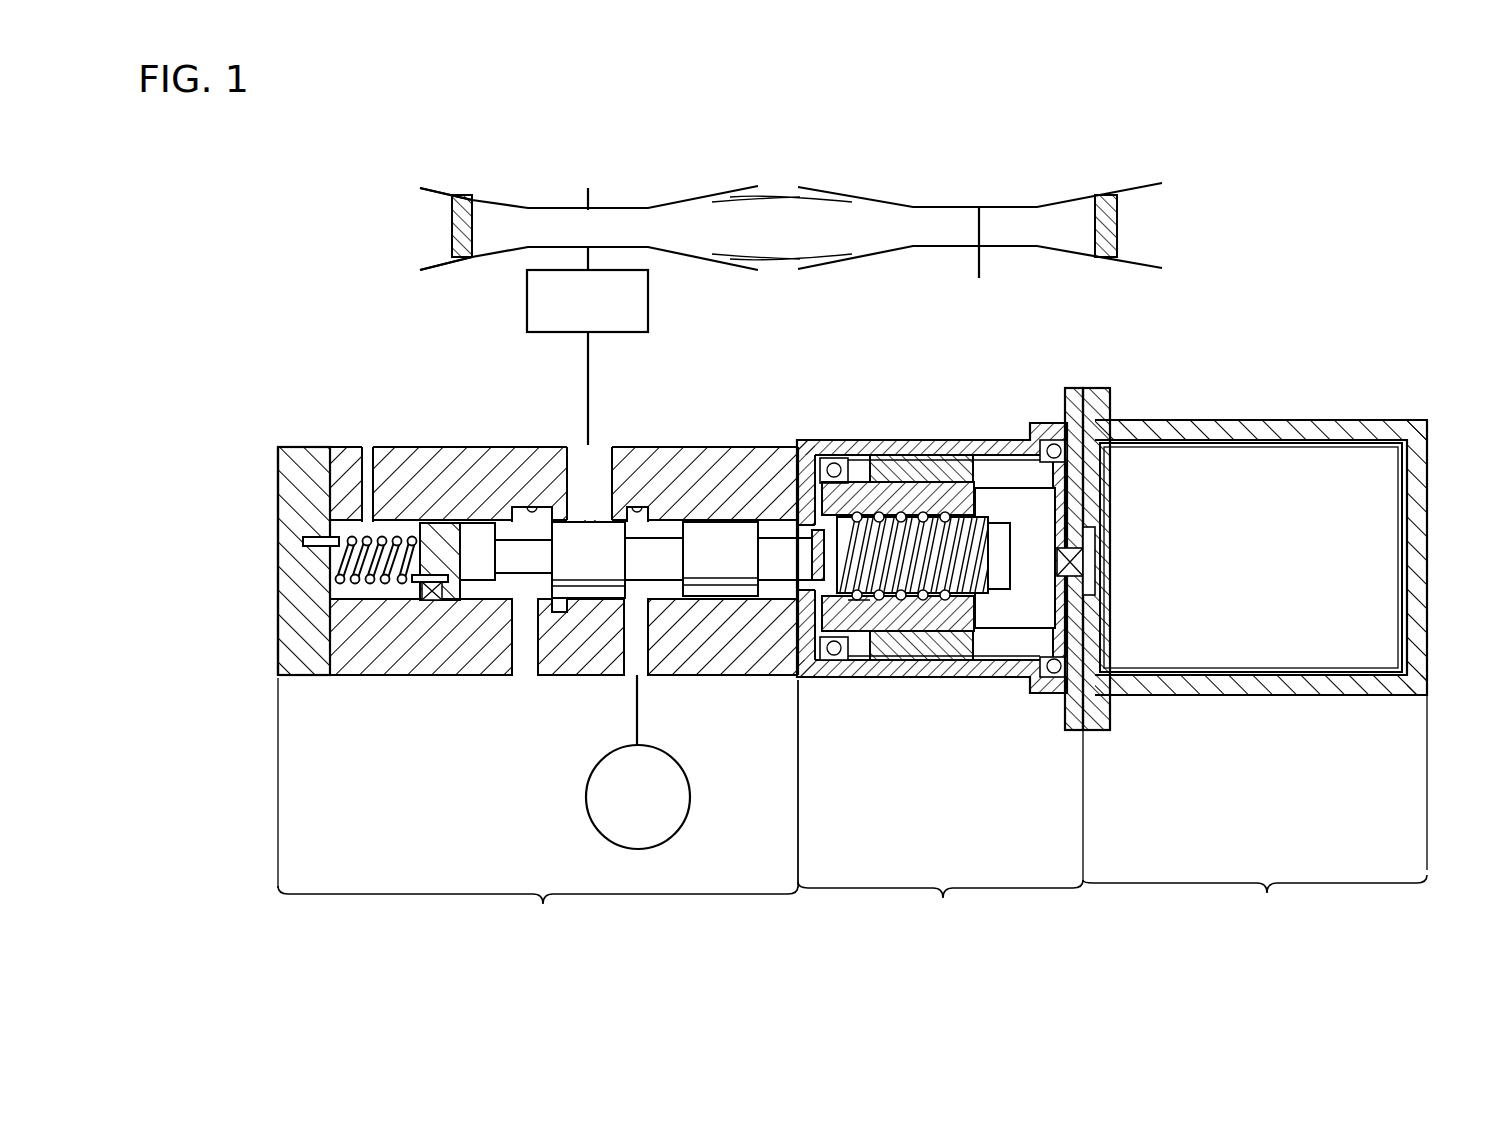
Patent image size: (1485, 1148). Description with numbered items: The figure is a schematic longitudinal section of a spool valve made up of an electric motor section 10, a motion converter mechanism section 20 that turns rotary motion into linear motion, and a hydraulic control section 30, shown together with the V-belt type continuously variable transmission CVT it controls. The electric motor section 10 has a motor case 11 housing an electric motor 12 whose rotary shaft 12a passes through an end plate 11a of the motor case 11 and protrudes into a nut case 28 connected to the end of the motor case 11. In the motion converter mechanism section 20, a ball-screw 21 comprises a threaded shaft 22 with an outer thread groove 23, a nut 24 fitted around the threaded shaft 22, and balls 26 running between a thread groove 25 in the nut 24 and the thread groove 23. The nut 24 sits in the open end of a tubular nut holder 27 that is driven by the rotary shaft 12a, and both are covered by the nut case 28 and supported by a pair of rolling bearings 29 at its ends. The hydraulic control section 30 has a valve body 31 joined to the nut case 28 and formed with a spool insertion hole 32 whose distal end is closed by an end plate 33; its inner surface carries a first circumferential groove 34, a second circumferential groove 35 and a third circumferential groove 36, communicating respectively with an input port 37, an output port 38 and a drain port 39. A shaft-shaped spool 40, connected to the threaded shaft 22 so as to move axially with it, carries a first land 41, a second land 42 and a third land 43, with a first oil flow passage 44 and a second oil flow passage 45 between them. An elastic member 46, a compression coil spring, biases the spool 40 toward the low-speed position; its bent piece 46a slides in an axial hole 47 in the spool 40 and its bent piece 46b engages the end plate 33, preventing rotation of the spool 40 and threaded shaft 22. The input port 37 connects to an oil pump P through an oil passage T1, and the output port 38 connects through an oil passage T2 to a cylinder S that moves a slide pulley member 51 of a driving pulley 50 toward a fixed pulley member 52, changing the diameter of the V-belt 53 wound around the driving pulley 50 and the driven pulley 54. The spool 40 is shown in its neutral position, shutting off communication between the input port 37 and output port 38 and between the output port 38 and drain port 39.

The electric motor section 10 is at (1255, 679).
The motor case 11 is at (1173, 433).
The end plate 11a is at (1088, 490).
The electric motor 12 is at (1260, 463).
The rotary shaft 12a is at (1080, 560).
The motion converter mechanism section 20 is at (940, 681).
The ball-screw 21 is at (920, 480).
The threaded shaft 22 is at (1000, 520).
The thread groove 23 is at (990, 517).
The nut 24 is at (903, 632).
The thread groove 25 is at (947, 598).
The balls 26 is at (870, 600).
The nut holder 27 is at (1020, 645).
The nut case 28 is at (883, 453).
The rolling bearings 29 is at (833, 452).
The hydraulic control section 30 is at (538, 695).
The valve body 31 is at (349, 447).
The spool insertion hole 32 is at (398, 522).
The end plate 33 is at (290, 472).
The first circumferential groove 34 is at (650, 497).
The second circumferential groove 35 is at (602, 503).
The third circumferential groove 36 is at (528, 510).
The input port 37 is at (642, 637).
The output port 38 is at (580, 458).
The drain port 39 is at (527, 668).
The spool 40 is at (720, 520).
The first land 41 is at (733, 582).
The second land 42 is at (590, 582).
The third land 43 is at (447, 677).
The first oil flow passage 44 is at (680, 587).
The second oil flow passage 45 is at (486, 678).
The elastic member 46 is at (355, 577).
The bent piece 46a is at (364, 676).
The bent piece 46b is at (318, 546).
The axial hole 47 is at (412, 678).
The driving pulley 50 is at (646, 202).
The slide pulley member 51 is at (437, 268).
The fixed pulley member 52 is at (437, 185).
The V-belt 53 is at (452, 225).
The driven pulley 54 is at (946, 207).
The V-belt type continuously variable transmission CVT is at (536, 202).
The cylinder S is at (648, 300).
The oil passage T1 is at (632, 728).
The oil passage T2 is at (588, 348).
The oil pump P is at (595, 807).